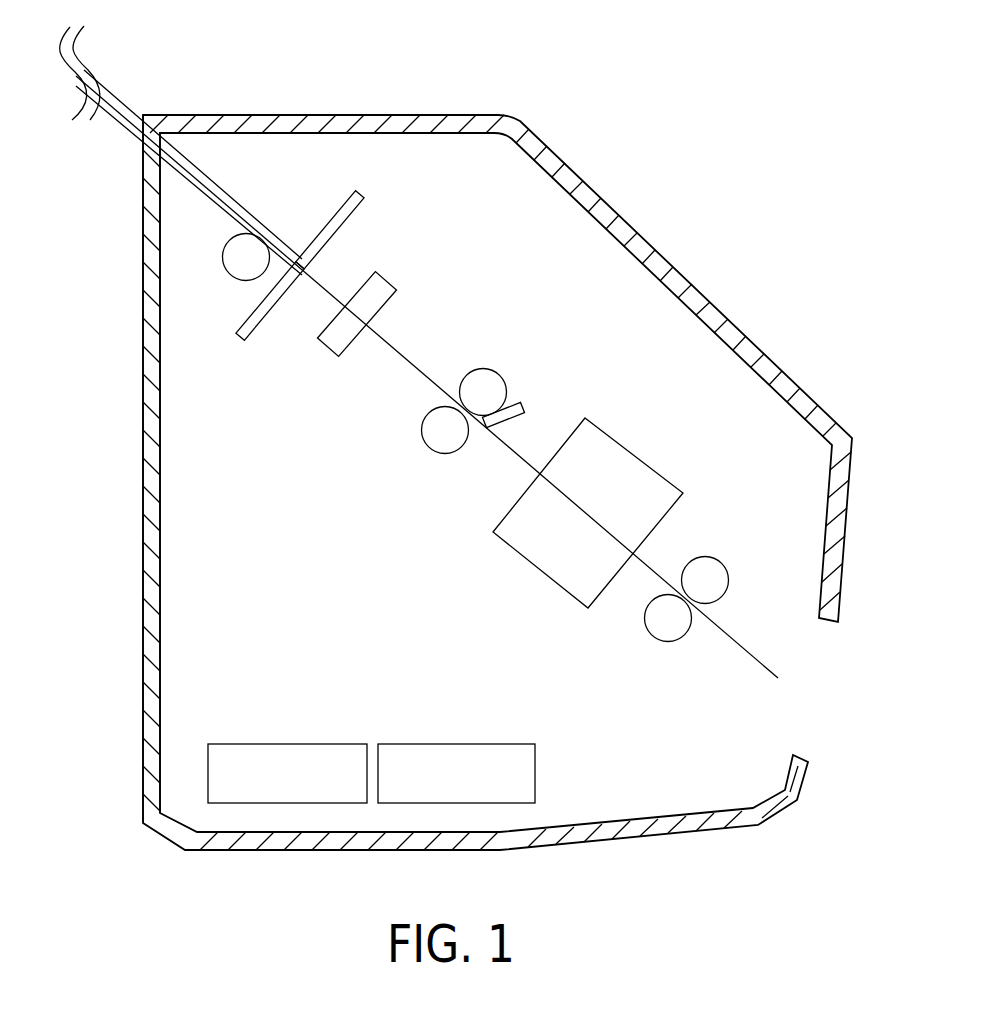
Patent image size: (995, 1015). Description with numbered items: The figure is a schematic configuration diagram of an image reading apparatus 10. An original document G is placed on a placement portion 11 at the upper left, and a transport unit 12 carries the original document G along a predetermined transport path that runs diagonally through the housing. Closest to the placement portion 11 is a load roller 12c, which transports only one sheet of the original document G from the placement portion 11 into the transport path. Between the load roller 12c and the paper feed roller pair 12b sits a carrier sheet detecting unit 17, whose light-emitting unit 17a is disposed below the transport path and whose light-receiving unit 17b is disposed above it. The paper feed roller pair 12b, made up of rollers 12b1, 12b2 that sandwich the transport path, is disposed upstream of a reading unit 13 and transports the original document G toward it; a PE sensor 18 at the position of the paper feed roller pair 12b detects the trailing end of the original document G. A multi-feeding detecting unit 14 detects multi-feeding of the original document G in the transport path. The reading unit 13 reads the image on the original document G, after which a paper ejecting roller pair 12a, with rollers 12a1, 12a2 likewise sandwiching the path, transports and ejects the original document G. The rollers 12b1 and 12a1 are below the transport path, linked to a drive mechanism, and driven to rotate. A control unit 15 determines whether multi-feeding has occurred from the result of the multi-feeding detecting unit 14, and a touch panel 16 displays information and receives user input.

The image reading apparatus 10 is at (561, 108).
The placement portion 11 is at (47, 147).
The original document G is at (108, 87).
The transport unit 12 is at (464, 453).
The paper ejecting roller pair 12a is at (555, 614).
The roller 12a1 is at (645, 622).
The roller 12a2 is at (727, 598).
The paper feed roller pair 12b is at (390, 484).
The roller 12b1 is at (433, 452).
The roller 12b2 is at (457, 388).
The load roller 12c is at (227, 273).
The reading unit 13 is at (622, 442).
The multi-feeding detecting unit 14 is at (393, 282).
The control unit 15 is at (450, 742).
The touch panel 16 is at (283, 743).
The carrier sheet detecting unit 17 is at (293, 321).
The light-emitting unit 17a is at (232, 340).
The light-receiving unit 17b is at (330, 252).
The PE sensor 18 is at (508, 400).